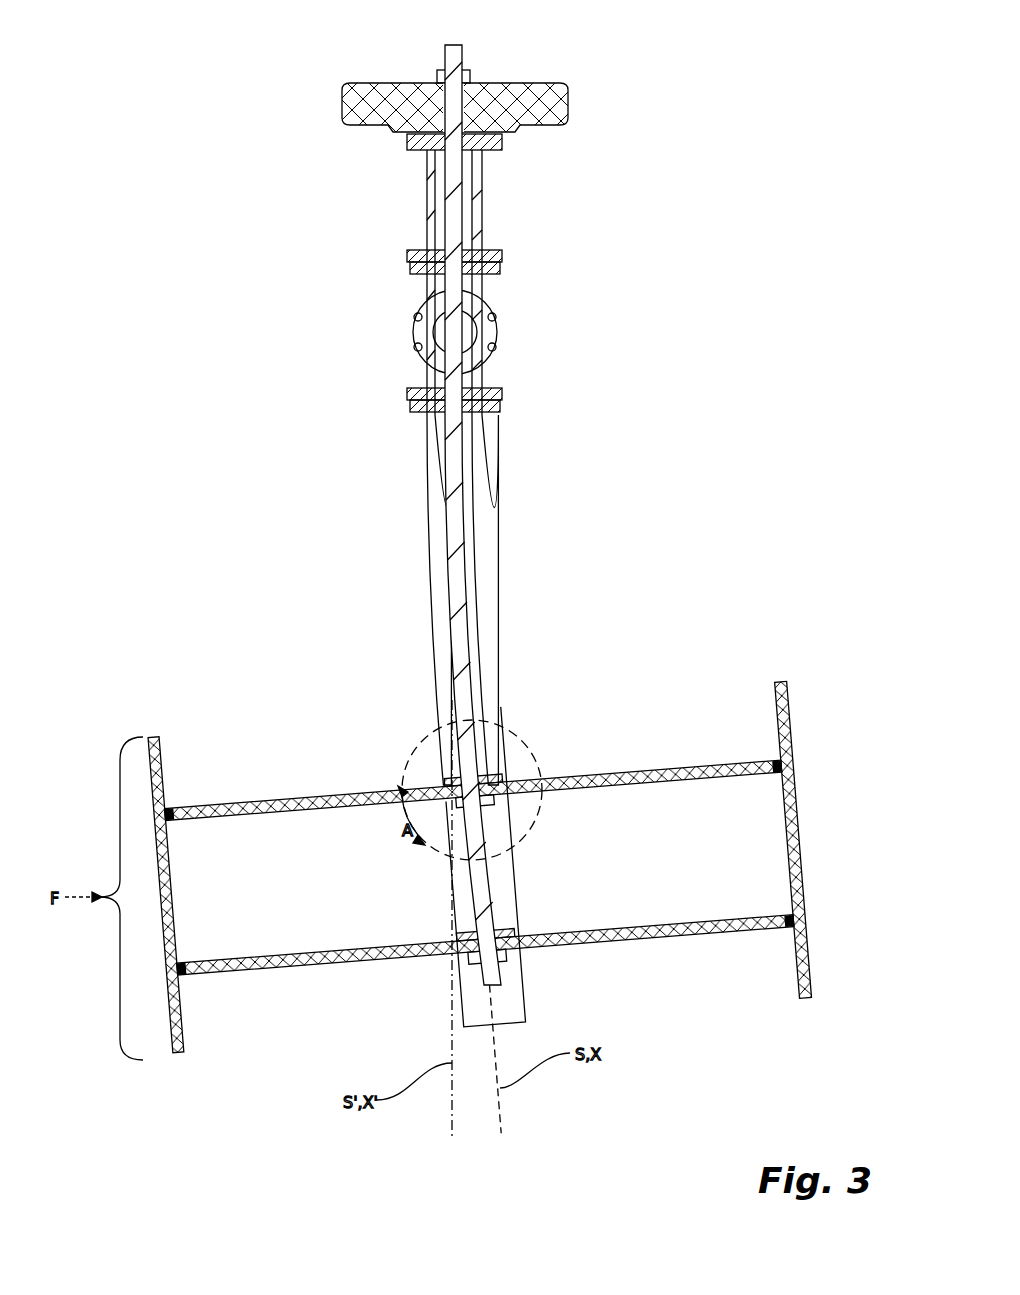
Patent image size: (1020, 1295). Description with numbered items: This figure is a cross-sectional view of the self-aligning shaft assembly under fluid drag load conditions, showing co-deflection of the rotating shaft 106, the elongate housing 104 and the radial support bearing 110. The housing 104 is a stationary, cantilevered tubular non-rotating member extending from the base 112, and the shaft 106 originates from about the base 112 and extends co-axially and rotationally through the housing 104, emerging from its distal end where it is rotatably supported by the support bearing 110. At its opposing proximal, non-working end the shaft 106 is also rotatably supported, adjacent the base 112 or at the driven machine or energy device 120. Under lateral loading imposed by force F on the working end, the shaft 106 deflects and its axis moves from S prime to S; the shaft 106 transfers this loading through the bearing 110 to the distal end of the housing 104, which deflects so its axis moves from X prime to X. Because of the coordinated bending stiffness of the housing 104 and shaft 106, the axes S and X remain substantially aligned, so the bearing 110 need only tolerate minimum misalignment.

The housing 104 is at (475, 505).
The shaft 106 is at (452, 62).
The support bearing 110 is at (527, 753).
The base 112 is at (492, 333).
The driven machine or energy device 120 is at (552, 108).